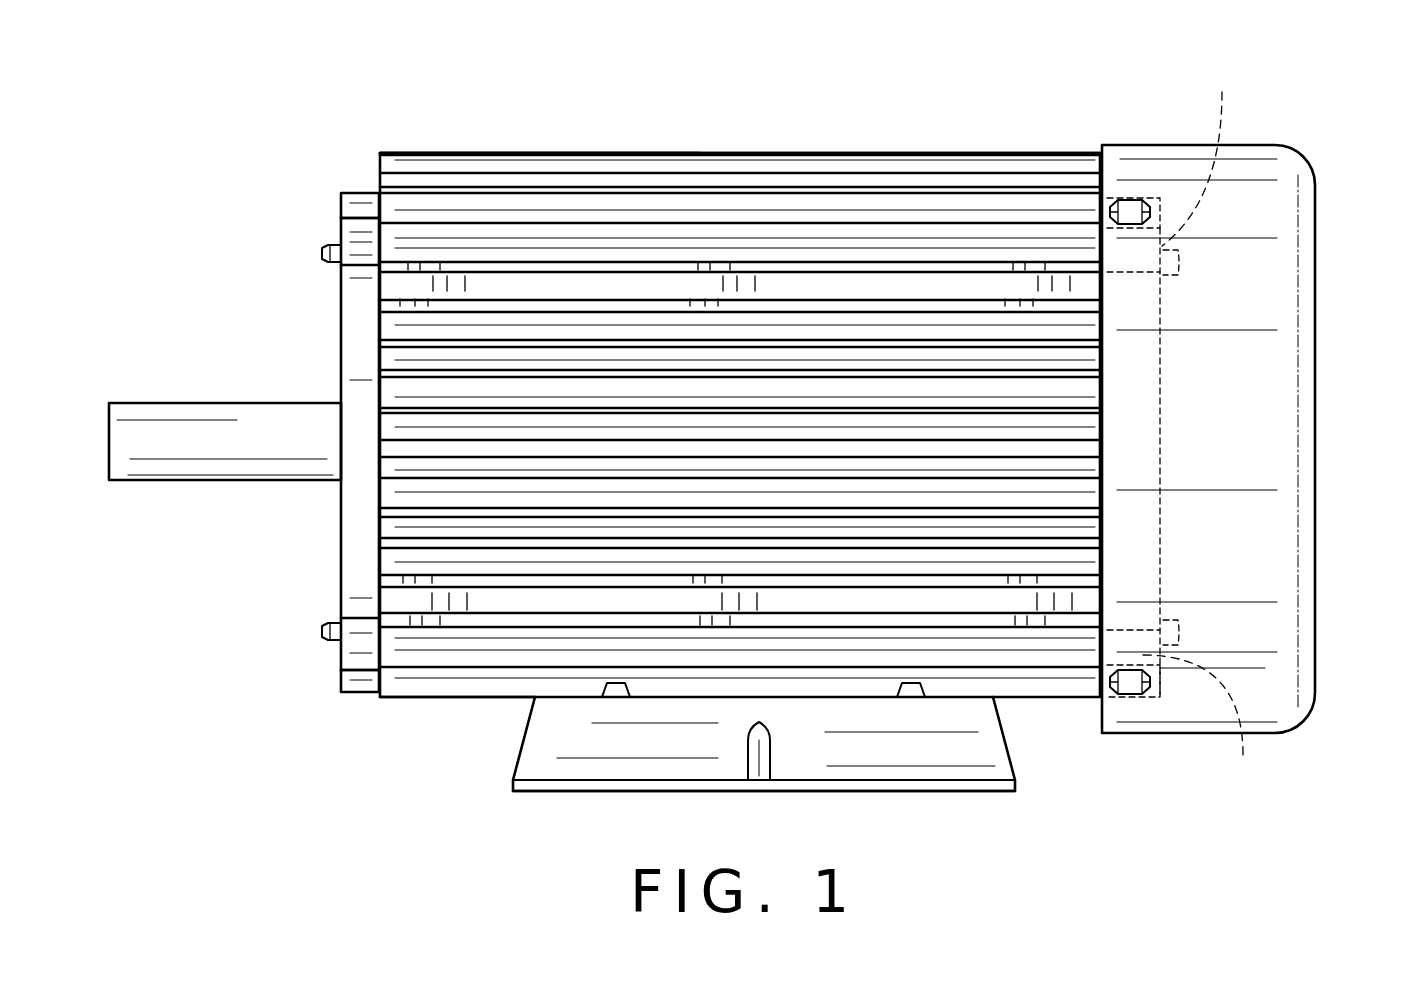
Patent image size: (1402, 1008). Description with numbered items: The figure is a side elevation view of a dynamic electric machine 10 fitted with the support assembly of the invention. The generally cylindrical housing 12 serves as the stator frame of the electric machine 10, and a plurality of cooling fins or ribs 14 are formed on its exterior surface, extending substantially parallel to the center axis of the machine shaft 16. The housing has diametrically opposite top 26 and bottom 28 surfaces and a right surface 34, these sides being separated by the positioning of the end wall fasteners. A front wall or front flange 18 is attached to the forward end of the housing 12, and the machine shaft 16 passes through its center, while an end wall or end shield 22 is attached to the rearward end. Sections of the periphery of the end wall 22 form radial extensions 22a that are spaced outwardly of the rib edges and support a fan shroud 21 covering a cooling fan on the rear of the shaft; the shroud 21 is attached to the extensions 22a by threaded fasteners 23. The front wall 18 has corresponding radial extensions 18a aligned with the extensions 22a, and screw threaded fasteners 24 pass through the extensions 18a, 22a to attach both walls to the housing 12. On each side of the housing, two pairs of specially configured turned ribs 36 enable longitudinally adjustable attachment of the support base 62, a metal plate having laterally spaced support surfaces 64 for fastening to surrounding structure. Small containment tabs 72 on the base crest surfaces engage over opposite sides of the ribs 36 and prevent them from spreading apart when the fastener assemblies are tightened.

The electric machine 10 is at (782, 130).
The housing 12 is at (468, 153).
The cooling fins or ribs 14 is at (400, 502).
The machine shaft 16 is at (106, 440).
The front wall or front flange 18 is at (340, 378).
The radial extensions of the front wall 18a is at (365, 228).
The fan shroud 21 is at (1255, 422).
The end wall or end shield 22 is at (1100, 215).
The radial extensions of the end wall 22a is at (1204, 425).
The threaded fasteners 23 is at (1130, 200).
The screw threaded fasteners 24 is at (322, 253).
The top surface or side 26 is at (545, 138).
The bottom surface or side 28 is at (466, 740).
The right surface or side 34 is at (1020, 490).
The turned ribs 36 is at (432, 266).
The support base 62 is at (925, 752).
The support surfaces 64 is at (568, 781).
The containment tabs or shoulders 72 is at (616, 690).